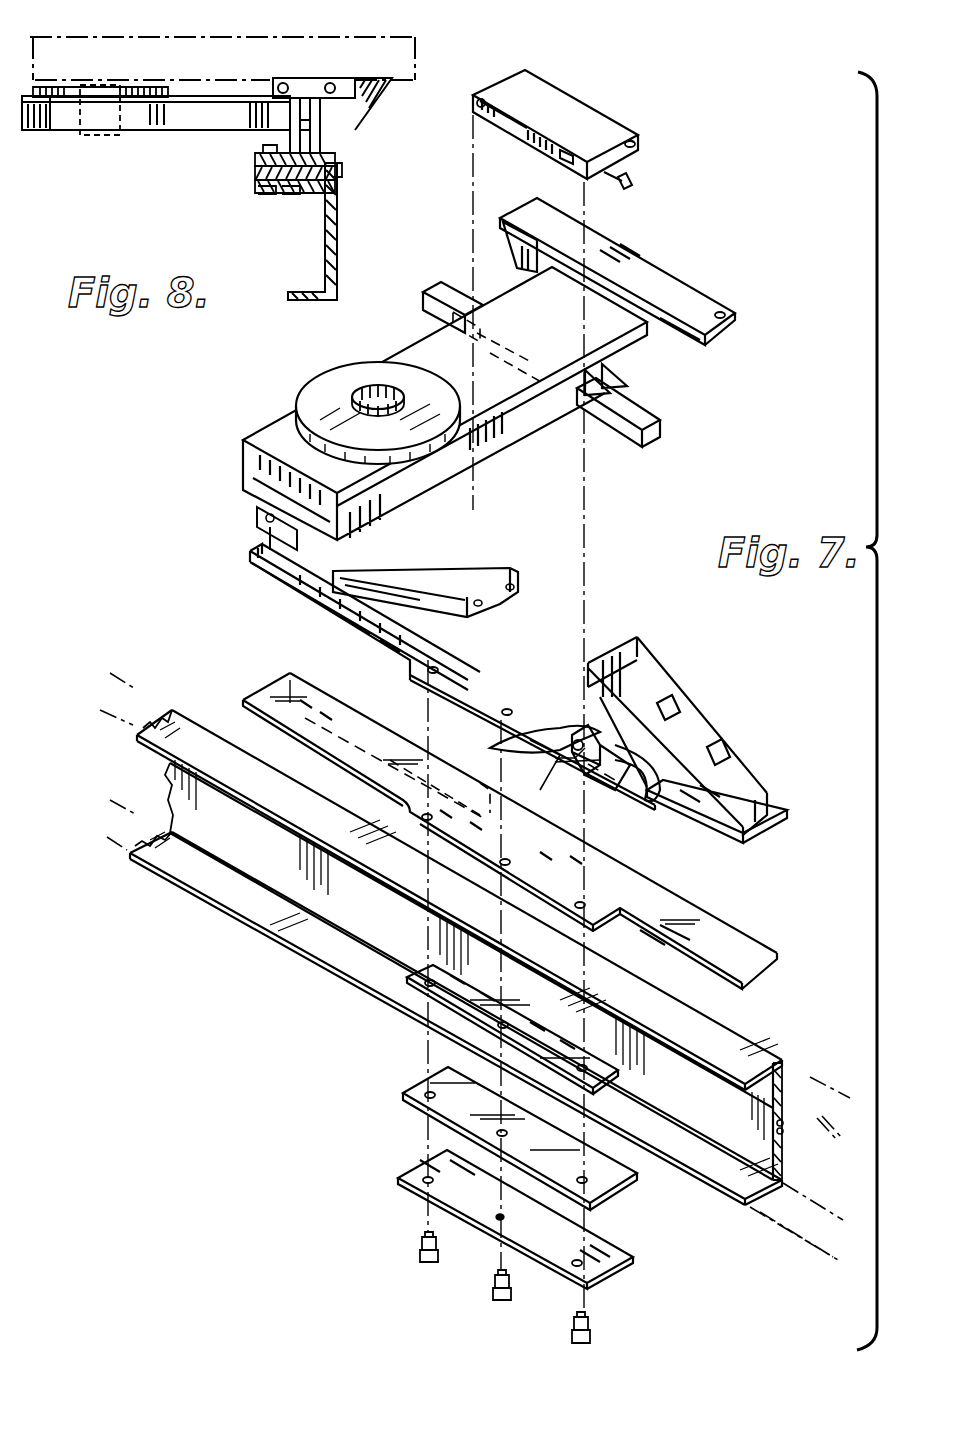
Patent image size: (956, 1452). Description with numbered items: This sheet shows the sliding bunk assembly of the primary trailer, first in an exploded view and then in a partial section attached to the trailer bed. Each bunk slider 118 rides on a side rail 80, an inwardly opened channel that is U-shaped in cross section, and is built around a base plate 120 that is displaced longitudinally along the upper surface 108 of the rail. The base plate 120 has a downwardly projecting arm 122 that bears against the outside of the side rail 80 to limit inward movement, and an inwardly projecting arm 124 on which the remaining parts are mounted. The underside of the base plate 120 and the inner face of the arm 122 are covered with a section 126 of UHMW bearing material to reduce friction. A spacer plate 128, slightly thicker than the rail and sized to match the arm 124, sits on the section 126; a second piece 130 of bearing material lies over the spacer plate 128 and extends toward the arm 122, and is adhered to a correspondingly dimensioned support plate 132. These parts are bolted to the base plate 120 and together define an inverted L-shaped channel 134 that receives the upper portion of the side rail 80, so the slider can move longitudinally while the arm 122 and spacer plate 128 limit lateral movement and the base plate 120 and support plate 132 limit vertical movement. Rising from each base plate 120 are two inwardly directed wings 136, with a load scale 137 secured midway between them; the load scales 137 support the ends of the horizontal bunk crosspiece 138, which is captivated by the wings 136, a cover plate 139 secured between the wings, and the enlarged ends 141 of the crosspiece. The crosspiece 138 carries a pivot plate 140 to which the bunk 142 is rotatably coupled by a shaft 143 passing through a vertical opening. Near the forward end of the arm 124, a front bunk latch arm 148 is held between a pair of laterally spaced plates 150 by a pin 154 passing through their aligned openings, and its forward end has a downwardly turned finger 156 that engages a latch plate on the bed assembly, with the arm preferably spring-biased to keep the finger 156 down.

In FIG. 8, the side rail 80 is at (338, 238).
In FIG. 7, the side rail 80 is at (787, 1090).
In FIG. 7, the upper surface 108 is at (750, 1043).
In FIG. 7, the bunk slider 118 is at (740, 728).
In FIG. 8, the base plate 120 is at (340, 166).
In FIG. 7, the base plate 120 is at (770, 812).
In FIG. 7, the downwardly projecting arm 122 is at (275, 578).
In FIG. 7, the inwardly projecting arm 124 is at (410, 655).
In FIG. 8, the section of bearing material 126 is at (336, 152).
In FIG. 7, the section of bearing material 126 is at (730, 933).
In FIG. 8, the spacer plate 128 is at (255, 170).
In FIG. 7, the spacer plate 128 is at (440, 1000).
In FIG. 8, the piece of bearing material 130 is at (262, 190).
In FIG. 7, the piece of bearing material 130 is at (615, 1180).
In FIG. 8, the support plate 132 is at (266, 196).
In FIG. 7, the support plate 132 is at (610, 1253).
In FIG. 8, the inverted L-shaped channel 134 is at (292, 196).
In FIG. 7, the inwardly directed wing 136 is at (447, 537).
In FIG. 7, the load scale 137 is at (643, 412).
In FIG. 8, the bunk crosspiece 138 is at (190, 118).
In FIG. 7, the bunk crosspiece 138 is at (512, 425).
In FIG. 7, the cover plate 139 is at (578, 112).
In FIG. 8, the pivot plate 140 is at (58, 96).
In FIG. 7, the pivot plate 140 is at (315, 386).
In FIG. 7, the enlarged end 141 is at (648, 280).
In FIG. 8, the bunk 142 is at (212, 48).
In FIG. 8, the shaft 143 is at (110, 140).
In FIG. 7, the front bunk latch arm 148 is at (610, 788).
In FIG. 7, the laterally spaced plate 150 is at (519, 741).
In FIG. 7, the pin 154 is at (563, 758).
In FIG. 7, the downwardly turned finger 156 is at (643, 800).